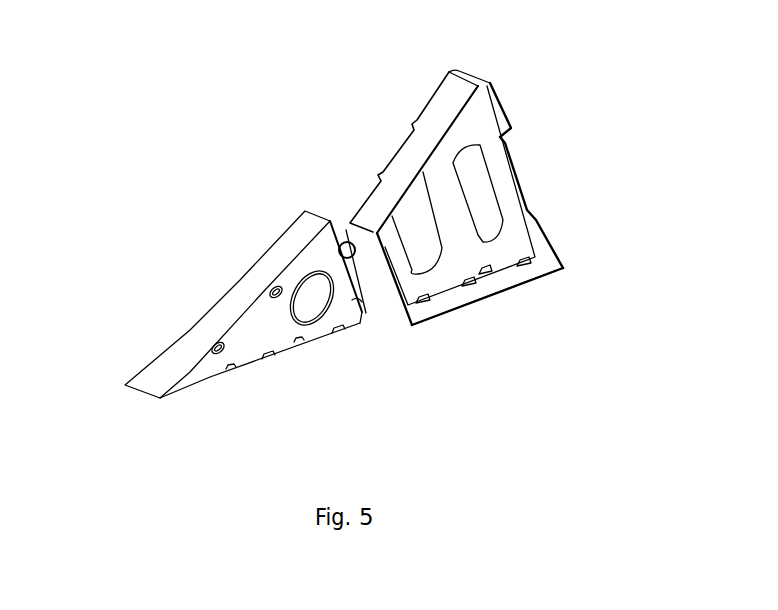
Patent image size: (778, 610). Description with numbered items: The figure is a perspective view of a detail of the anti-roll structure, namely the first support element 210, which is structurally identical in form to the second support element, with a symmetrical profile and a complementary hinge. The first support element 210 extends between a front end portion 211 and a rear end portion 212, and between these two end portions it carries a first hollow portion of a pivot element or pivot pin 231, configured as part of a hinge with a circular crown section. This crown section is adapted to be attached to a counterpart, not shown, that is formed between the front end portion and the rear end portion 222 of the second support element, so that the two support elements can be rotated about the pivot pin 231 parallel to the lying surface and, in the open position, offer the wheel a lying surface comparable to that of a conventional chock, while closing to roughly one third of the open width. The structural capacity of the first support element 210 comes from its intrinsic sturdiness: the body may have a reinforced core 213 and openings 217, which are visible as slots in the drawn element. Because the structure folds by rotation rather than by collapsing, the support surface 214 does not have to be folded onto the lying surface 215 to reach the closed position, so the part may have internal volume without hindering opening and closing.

The first support element 210 is at (86, 32).
The front end portion 211 is at (132, 395).
The rear end portion 212 is at (500, 95).
The reinforced core 213 is at (503, 193).
The support surface 214 is at (450, 108).
The lying surface 215 is at (533, 280).
The openings 217 is at (425, 257).
The pivot pin 231 is at (342, 223).
The rear end portion of the second support element 222 is at (180, 607).